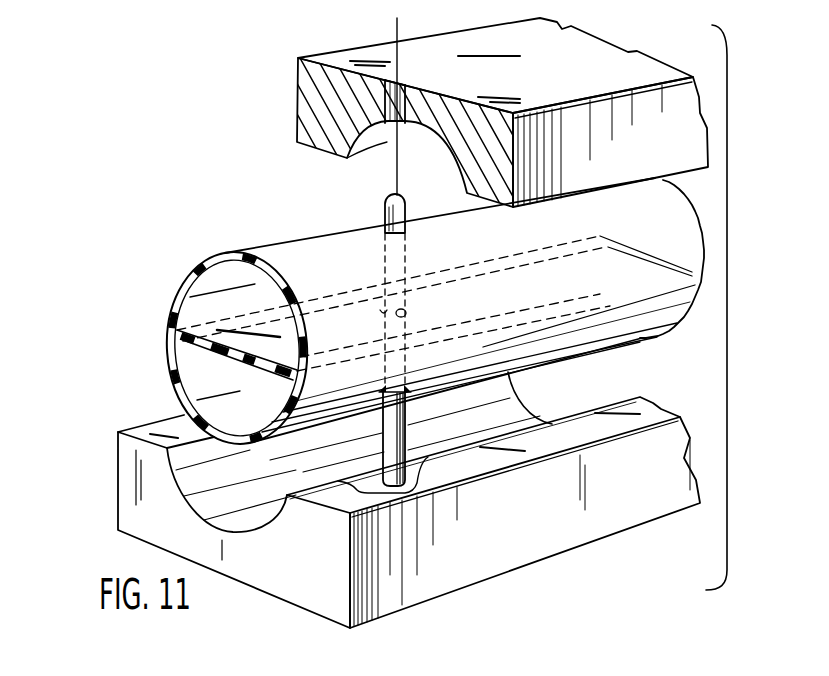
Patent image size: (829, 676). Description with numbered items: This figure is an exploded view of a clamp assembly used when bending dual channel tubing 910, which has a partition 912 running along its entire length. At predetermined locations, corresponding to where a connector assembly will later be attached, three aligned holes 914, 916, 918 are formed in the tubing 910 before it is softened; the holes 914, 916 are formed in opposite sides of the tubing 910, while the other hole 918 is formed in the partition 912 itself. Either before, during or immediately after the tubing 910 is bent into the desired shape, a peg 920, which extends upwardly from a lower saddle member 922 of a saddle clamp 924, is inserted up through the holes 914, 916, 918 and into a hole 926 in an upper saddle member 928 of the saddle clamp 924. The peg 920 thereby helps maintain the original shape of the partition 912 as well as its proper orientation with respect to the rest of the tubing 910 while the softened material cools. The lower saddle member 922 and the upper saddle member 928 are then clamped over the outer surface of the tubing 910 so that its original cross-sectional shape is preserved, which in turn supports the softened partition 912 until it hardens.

The dual channel tubing 910 is at (230, 248).
The partition 912 is at (190, 330).
The hole 914 is at (406, 222).
The hole 916 is at (400, 386).
The hole 918 is at (405, 310).
The peg 920 is at (404, 432).
The lower saddle member 922 is at (618, 524).
The saddle clamp 924 is at (108, 437).
The hole 926 is at (406, 88).
The upper saddle member 928 is at (298, 92).